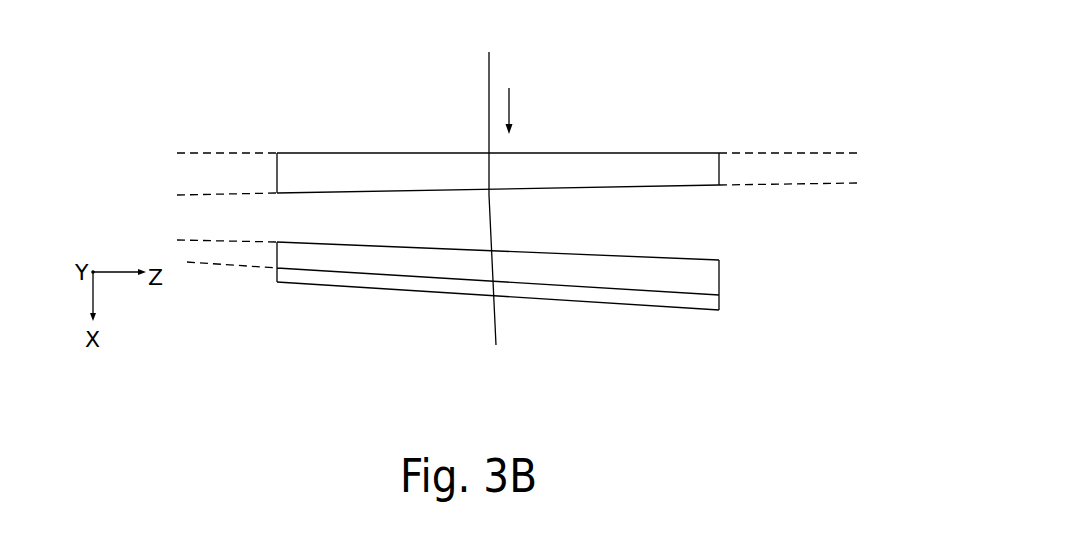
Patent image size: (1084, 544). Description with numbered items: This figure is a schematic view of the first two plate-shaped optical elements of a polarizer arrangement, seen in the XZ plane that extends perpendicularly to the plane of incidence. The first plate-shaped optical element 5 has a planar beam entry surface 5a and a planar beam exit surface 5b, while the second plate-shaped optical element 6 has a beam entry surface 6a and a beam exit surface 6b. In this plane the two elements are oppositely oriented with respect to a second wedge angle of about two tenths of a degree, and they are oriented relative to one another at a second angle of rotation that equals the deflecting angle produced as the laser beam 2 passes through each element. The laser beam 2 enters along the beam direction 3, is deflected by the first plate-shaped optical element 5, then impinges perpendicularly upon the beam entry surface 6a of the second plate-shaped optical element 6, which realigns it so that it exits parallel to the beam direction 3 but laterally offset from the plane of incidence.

The laser beam 2 is at (490, 68).
The beam direction 3 is at (511, 108).
The first plate-shaped optical element 5 is at (517, 145).
The beam entry surface 5a is at (368, 152).
The beam exit surface 5b is at (378, 205).
The second plate-shaped optical element 6 is at (493, 239).
The beam entry surface 6a is at (403, 248).
The beam exit surface 6b is at (393, 287).